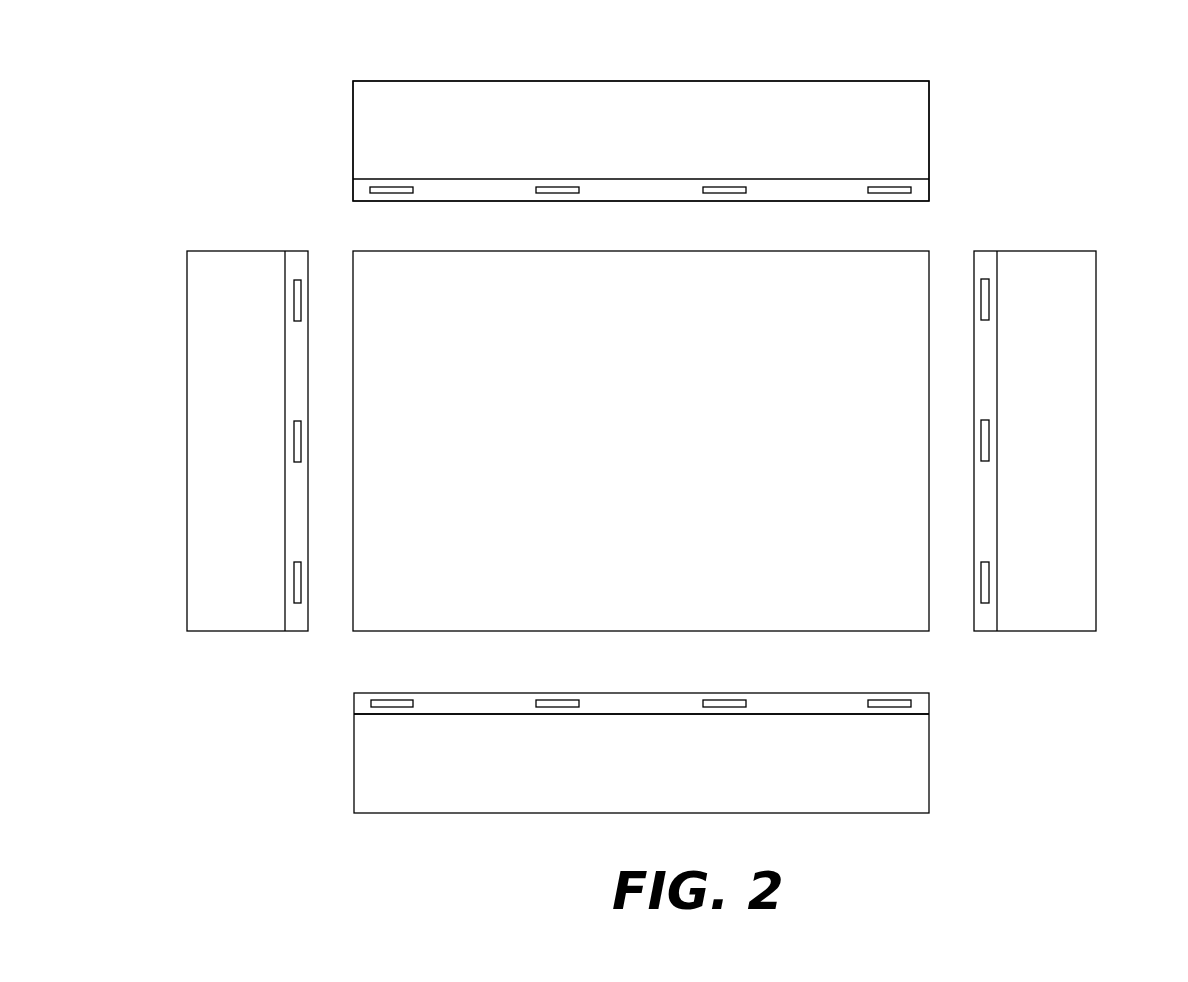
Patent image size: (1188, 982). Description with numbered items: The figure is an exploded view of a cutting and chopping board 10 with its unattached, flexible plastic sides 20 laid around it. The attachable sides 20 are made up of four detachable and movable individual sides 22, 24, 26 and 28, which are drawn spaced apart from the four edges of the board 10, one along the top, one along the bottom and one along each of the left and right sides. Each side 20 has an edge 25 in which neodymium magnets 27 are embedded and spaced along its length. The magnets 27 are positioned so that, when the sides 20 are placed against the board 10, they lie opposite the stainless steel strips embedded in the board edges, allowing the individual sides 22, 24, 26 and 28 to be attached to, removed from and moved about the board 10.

The cutting and chopping board 10 is at (652, 453).
The plastic sides 20 is at (507, 74).
The individual side 22 is at (195, 392).
The individual side 24 is at (901, 119).
The edge of side 25 is at (472, 696).
The individual side 26 is at (1084, 441).
The neodymium magnet 27 is at (876, 706).
The individual side 28 is at (594, 790).